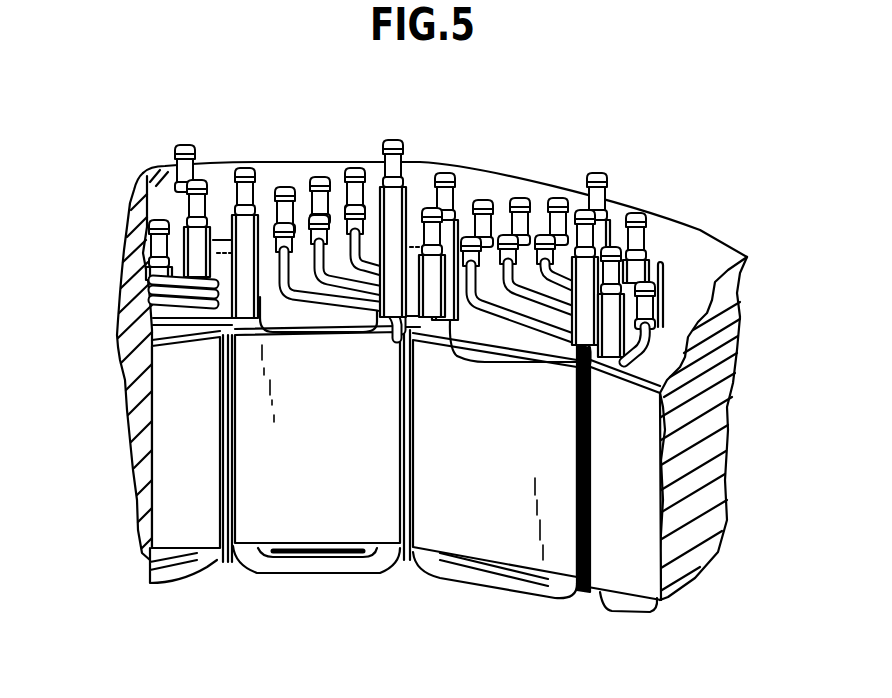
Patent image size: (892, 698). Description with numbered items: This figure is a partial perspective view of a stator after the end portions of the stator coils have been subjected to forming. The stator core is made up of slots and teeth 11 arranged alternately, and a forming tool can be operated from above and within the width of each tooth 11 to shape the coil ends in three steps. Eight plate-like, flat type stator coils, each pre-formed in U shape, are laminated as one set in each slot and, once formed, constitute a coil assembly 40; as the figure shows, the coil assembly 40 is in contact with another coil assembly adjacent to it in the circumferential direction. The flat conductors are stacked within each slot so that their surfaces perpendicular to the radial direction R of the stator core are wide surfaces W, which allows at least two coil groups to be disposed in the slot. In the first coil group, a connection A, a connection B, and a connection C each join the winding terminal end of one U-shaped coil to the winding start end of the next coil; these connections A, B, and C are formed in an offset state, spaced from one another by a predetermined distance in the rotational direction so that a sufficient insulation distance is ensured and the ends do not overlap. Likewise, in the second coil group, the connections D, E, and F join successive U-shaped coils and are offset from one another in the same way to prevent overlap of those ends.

The tooth 11 is at (297, 417).
The coil assembly 40 is at (388, 140).
The connection A is at (466, 288).
The connection B is at (503, 266).
The connection C is at (540, 252).
The connection D is at (488, 198).
The connection E is at (527, 197).
The connection F is at (564, 196).
The radial direction R is at (673, 217).
The wide surface W is at (597, 373).